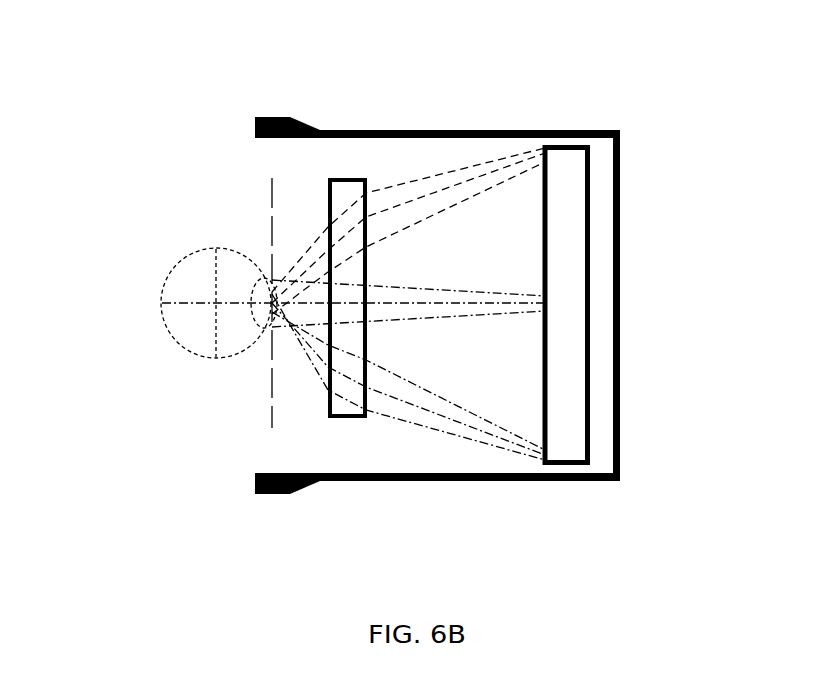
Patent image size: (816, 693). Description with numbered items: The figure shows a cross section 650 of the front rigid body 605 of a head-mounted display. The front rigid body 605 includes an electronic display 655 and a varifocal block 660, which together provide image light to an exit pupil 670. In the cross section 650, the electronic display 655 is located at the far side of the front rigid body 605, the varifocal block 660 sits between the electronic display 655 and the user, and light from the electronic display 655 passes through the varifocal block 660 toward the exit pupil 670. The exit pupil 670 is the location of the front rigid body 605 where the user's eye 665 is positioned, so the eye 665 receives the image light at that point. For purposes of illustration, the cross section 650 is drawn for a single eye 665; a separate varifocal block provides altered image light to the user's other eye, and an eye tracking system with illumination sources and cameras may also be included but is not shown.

The cross section 650 is at (63, 53).
The front rigid body 605 is at (586, 131).
The electronic display 655 is at (593, 168).
The varifocal block 660 is at (327, 190).
The eye 665 is at (186, 258).
The exit pupil 670 is at (268, 415).